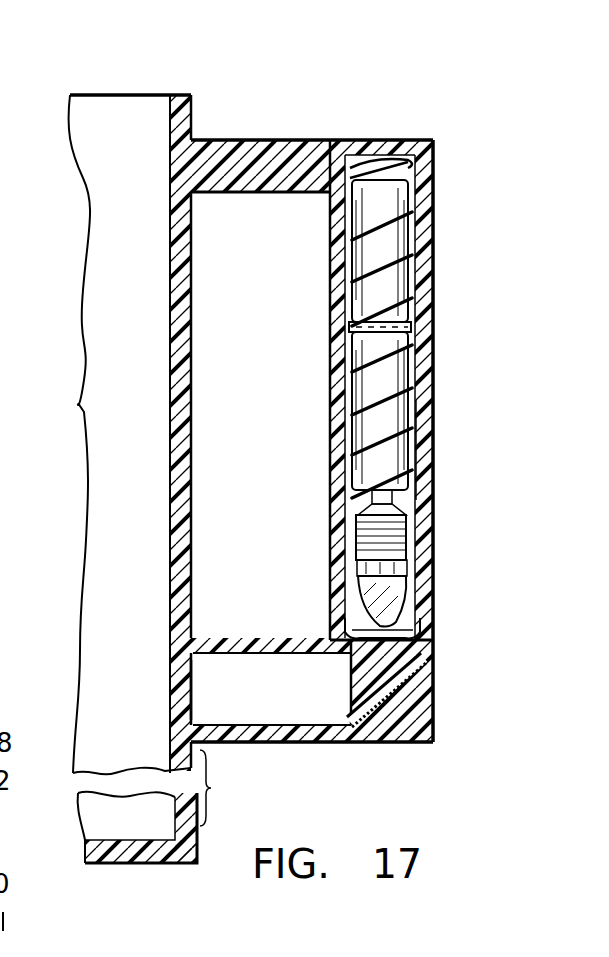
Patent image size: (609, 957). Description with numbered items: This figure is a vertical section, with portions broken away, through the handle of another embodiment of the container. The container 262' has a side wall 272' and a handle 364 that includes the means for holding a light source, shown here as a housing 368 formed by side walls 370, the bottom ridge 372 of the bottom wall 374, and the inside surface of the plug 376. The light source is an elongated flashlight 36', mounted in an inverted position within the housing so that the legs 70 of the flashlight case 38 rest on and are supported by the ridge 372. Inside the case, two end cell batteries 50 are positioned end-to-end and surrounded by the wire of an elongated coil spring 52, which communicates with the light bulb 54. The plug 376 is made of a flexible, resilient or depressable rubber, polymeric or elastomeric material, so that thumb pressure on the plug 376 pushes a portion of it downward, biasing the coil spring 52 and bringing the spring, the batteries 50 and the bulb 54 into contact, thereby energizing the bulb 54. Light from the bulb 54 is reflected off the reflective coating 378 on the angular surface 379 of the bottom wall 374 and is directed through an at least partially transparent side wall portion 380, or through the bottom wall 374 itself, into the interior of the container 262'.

The container 262' is at (140, 452).
The side wall 272' is at (100, 434).
The plug 376 is at (388, 150).
The handle 364 is at (446, 170).
The coil spring 52 is at (417, 204).
The side walls 370 is at (425, 262).
The elongated flashlight 36' is at (419, 313).
The housing 368 is at (331, 243).
The end cell batteries 50 is at (352, 345).
The flashlight case 38 is at (427, 445).
The light bulb 54 is at (364, 590).
The bottom wall 374 is at (265, 645).
The legs 70 is at (418, 627).
The bottom ridge 372 is at (415, 645).
The reflective coating 378 is at (366, 712).
The side wall portion 380 is at (184, 687).
The angular surface 379 is at (358, 727).